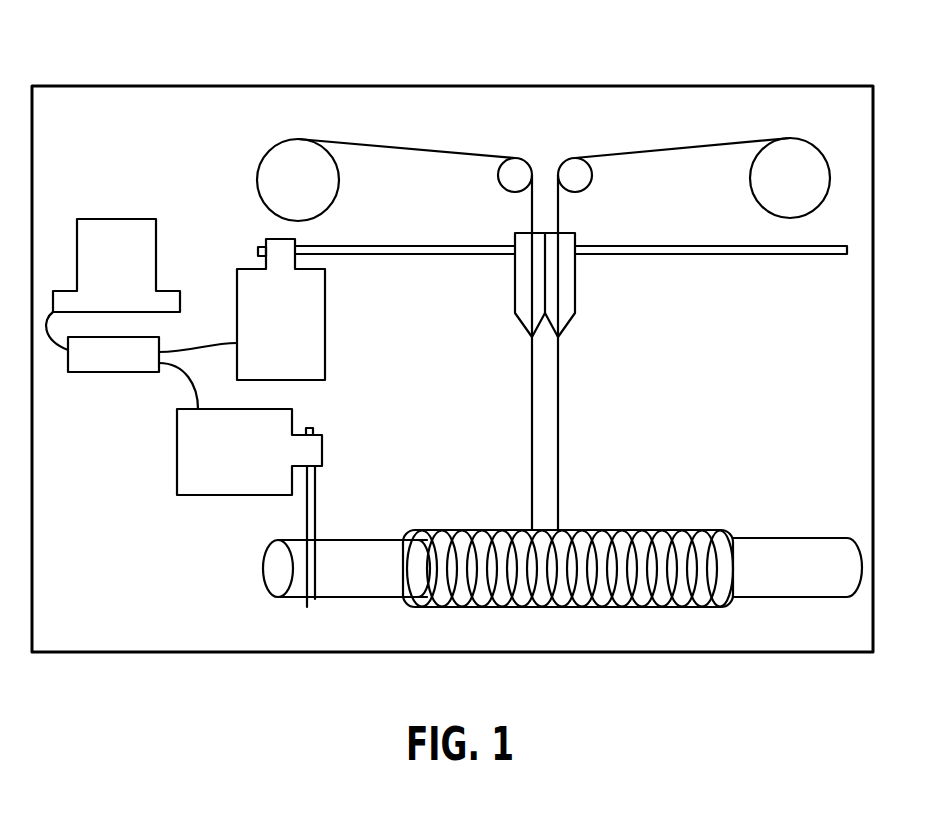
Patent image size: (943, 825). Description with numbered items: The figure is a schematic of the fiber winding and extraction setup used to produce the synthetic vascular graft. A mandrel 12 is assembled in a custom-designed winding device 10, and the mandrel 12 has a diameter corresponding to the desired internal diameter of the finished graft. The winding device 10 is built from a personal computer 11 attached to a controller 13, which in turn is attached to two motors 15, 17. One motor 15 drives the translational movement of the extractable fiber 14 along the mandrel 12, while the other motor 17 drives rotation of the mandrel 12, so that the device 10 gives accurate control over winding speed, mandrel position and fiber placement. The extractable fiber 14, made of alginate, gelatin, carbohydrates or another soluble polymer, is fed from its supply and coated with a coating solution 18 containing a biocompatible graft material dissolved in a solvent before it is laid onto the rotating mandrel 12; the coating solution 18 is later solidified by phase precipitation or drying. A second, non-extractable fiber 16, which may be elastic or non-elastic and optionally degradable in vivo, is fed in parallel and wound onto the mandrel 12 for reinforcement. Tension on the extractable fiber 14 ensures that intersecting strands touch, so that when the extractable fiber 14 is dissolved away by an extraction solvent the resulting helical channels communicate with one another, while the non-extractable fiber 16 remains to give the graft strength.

The winding device 10 is at (490, 85).
The personal computer 11 is at (117, 219).
The mandrel 12 is at (737, 538).
The controller 13 is at (108, 372).
The extractable fiber 14 is at (427, 150).
The motor 15 is at (325, 340).
The non-extractable fiber 16 is at (655, 148).
The motor 17 is at (177, 458).
The coating solution 18 is at (545, 287).